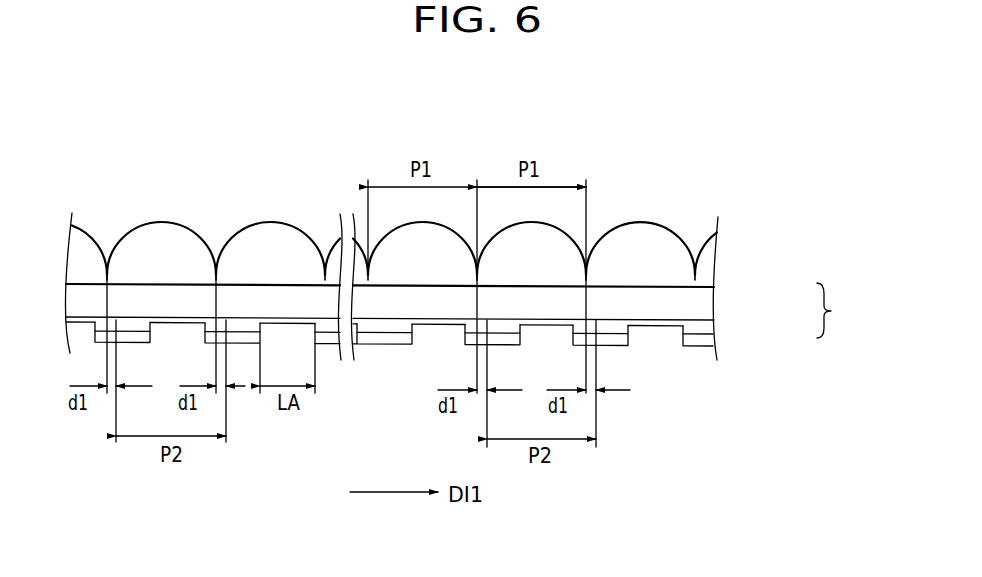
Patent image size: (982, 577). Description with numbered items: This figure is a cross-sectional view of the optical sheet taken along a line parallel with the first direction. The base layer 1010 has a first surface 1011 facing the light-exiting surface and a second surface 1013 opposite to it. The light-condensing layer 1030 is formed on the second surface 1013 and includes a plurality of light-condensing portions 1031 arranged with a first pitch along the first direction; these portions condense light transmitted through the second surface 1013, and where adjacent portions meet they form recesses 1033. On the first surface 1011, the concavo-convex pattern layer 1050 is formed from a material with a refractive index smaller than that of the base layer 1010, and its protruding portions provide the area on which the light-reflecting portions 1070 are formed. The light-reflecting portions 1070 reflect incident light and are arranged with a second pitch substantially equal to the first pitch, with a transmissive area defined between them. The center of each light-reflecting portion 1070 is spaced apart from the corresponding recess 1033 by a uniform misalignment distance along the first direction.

The base layer 1010 is at (849, 310).
The first surface 1011 is at (704, 316).
The second surface 1013 is at (704, 288).
The light-condensing layer 1030 is at (712, 276).
The light-condensing portion 1031 is at (637, 233).
The recess 1033 is at (691, 262).
The concavo-convex pattern layer 1050 is at (704, 330).
The light-reflecting portion 1070 is at (385, 347).